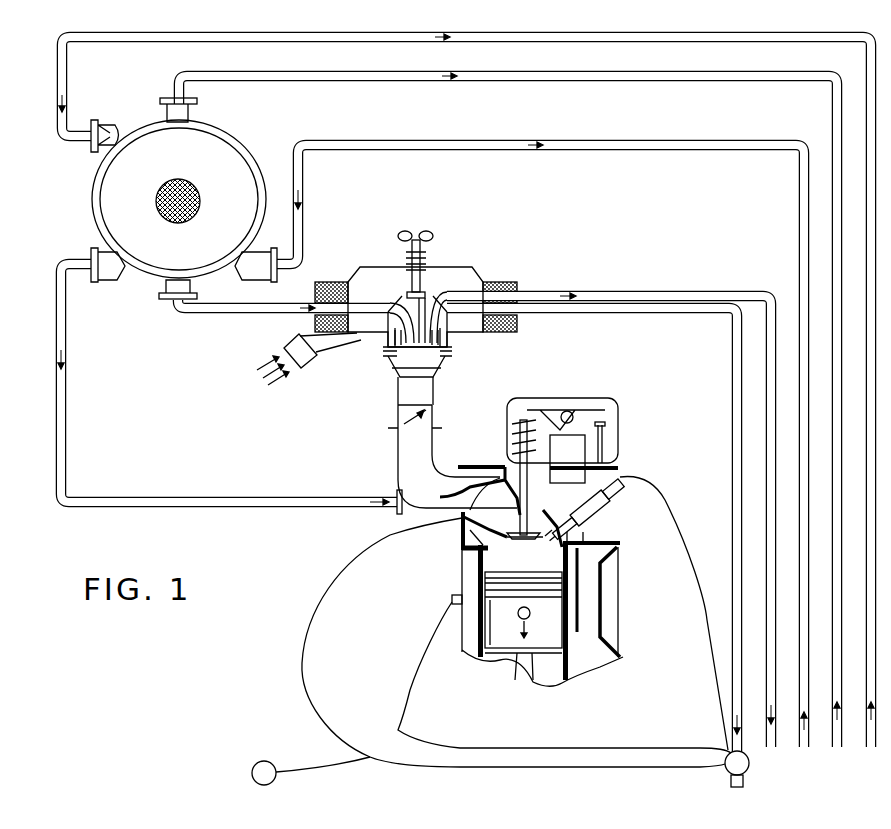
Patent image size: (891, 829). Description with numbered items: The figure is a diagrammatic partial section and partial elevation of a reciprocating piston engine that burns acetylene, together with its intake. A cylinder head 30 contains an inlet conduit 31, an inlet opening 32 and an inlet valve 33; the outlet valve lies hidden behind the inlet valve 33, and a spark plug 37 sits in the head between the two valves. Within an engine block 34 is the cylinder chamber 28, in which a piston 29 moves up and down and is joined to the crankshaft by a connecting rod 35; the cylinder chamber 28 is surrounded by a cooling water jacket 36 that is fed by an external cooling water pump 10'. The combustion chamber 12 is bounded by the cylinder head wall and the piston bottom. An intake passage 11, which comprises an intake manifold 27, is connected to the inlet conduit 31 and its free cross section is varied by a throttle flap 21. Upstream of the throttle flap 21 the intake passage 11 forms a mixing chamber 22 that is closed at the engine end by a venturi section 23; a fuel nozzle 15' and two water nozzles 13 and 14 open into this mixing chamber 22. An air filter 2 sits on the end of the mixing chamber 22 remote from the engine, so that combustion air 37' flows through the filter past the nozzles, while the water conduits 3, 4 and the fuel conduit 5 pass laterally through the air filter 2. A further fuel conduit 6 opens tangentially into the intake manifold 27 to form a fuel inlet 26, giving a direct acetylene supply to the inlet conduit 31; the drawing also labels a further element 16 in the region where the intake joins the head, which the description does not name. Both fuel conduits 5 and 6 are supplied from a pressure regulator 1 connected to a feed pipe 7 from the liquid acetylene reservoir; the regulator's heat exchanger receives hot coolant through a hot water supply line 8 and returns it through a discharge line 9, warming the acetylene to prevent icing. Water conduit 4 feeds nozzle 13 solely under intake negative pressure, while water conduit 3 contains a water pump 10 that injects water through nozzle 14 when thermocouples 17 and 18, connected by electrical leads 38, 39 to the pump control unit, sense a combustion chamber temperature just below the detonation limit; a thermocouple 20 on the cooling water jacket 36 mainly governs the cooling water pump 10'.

The pressure regulator 1 is at (106, 205).
The air filter 2 is at (544, 491).
The water conduit 3 is at (633, 313).
The water conduit 4 is at (630, 292).
The fuel conduit 5 is at (225, 313).
The fuel conduit 6 is at (200, 480).
The feed pipe 7 is at (588, 41).
The hot water supply line 8 is at (601, 82).
The discharge line 9 is at (612, 151).
The water pump 10 is at (758, 769).
The cooling water pump 10' is at (287, 771).
The intake passage 11 is at (392, 398).
The combustion chamber 12 is at (478, 560).
The water nozzle 13 is at (440, 368).
The water nozzle 14 is at (443, 345).
The fuel nozzle 15' is at (371, 351).
The intake port 16 is at (462, 540).
The thermocouple 17 is at (478, 468).
The thermocouple 18 is at (613, 507).
The thermocouple 20 is at (452, 600).
The throttle flap 21 is at (406, 420).
The mixing chamber 22 is at (394, 375).
The venturi section 23 is at (435, 392).
The fuel inlet 26 is at (405, 512).
The intake manifold 27 is at (395, 462).
The cylinder chamber 28 is at (580, 570).
The piston 29 is at (560, 640).
The cylinder head 30 is at (560, 537).
The inlet conduit 31 is at (518, 500).
The inlet opening 32 is at (533, 490).
The inlet valve 33 is at (512, 440).
The engine block 34 is at (628, 619).
The connecting rod 35 is at (525, 673).
The cooling water jacket 36 is at (472, 647).
The spark plug 37 is at (602, 522).
The combustion air 37' is at (327, 309).
The electrical lead 38 is at (308, 625).
The electrical lead 39 is at (688, 520).